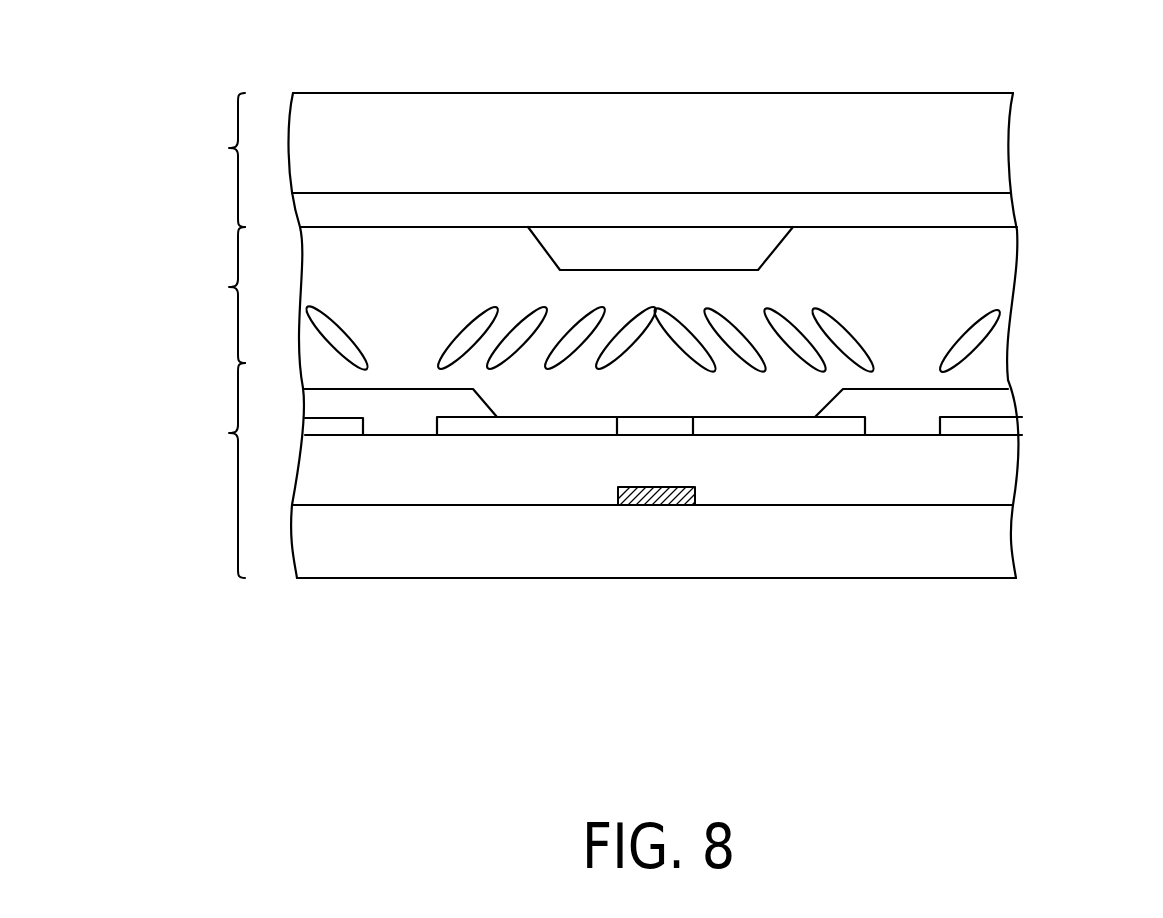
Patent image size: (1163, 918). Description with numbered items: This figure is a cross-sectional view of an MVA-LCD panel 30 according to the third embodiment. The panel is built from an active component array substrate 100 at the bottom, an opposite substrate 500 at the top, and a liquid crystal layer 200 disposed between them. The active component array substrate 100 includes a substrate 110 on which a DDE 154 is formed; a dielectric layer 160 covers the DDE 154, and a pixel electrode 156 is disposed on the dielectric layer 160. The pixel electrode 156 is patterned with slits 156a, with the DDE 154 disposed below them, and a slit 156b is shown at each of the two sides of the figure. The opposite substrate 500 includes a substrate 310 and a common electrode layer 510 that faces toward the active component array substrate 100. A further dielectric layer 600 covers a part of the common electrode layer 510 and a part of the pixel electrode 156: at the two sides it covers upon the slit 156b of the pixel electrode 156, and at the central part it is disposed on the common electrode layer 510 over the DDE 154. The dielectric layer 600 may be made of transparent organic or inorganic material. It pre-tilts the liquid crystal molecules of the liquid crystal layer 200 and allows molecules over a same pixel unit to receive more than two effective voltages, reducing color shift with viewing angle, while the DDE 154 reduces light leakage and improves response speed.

The MVA-LCD panel 30 is at (1023, 747).
The active component array substrate 100 is at (661, 517).
The substrate 110 is at (995, 547).
The DDE 154 is at (655, 505).
The pixel electrode 156 is at (1012, 430).
The slits 156a is at (631, 423).
The slit 156b is at (377, 423).
The dielectric layer 160 is at (1005, 475).
The liquid crystal layer 200 is at (594, 302).
The substrate 310 is at (993, 157).
The opposite substrate 500 is at (655, 161).
The common electrode layer 510 is at (993, 213).
The dielectric layer 600 is at (658, 245).